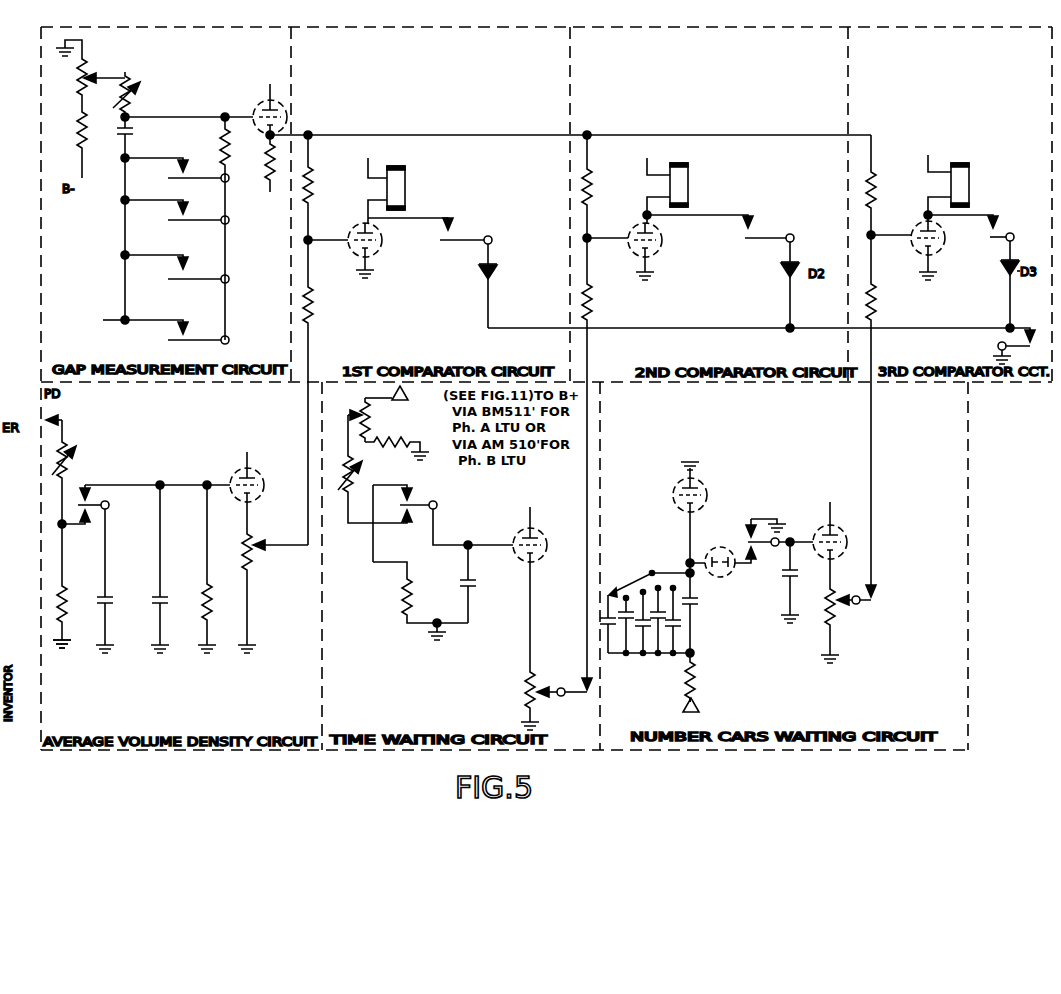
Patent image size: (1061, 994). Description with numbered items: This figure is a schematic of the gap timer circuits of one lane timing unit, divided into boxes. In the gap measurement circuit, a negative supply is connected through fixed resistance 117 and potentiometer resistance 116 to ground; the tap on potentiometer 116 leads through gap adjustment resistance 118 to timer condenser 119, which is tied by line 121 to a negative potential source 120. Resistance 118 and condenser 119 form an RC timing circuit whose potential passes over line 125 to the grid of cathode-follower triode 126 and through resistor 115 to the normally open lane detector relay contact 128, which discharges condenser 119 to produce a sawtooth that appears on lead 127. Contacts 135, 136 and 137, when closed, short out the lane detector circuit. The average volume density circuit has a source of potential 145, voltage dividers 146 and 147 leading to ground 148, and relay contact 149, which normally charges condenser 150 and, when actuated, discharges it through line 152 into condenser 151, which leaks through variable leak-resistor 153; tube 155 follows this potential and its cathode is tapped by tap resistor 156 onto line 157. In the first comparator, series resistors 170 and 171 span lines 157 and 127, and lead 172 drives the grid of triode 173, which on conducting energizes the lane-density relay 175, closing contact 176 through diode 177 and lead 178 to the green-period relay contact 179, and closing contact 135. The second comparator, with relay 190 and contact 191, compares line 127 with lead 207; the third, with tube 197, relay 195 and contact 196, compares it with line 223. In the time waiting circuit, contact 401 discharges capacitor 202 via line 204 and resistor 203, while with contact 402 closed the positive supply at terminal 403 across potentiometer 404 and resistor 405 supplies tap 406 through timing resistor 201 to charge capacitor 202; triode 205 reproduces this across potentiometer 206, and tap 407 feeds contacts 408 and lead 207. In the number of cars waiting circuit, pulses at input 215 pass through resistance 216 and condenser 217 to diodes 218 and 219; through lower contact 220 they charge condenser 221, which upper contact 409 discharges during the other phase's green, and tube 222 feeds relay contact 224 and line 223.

The resistor 115 is at (240, 228).
The potentiometer resistance 116 is at (92, 62).
The fixed resistance 117 is at (91, 130).
The gap adjustment resistance 118 is at (140, 92).
The timer condenser 119 is at (136, 135).
The source of negative potential 120 is at (107, 318).
The line 121 is at (121, 232).
The line 125 is at (175, 112).
The triode 126 is at (257, 101).
The lead 127 is at (470, 133).
The lane detector relay contact 128 is at (188, 158).
The relay LDS contact 135 is at (188, 200).
The relay contact 136 is at (177, 262).
The relay contact 137 is at (177, 324).
The source of potential 145 is at (64, 418).
The voltage divider 146 is at (76, 460).
The voltage divider 147 is at (70, 594).
The ground 148 is at (72, 645).
The relay contact 149 is at (112, 505).
The condenser 150 is at (113, 597).
The condenser 151 is at (168, 597).
The line 152 is at (143, 481).
The variable leak-resistor 153 is at (214, 596).
The tube 155 is at (258, 476).
The tap resistor 156 is at (255, 558).
The line 157 is at (296, 536).
The voltage dividing resistor 170 is at (316, 306).
The voltage dividing resistor 171 is at (316, 192).
The lead 172 is at (315, 238).
The triode 173 is at (380, 250).
The LDS relay 175 is at (408, 180).
The contact 176 is at (458, 219).
The diode 177 is at (495, 268).
The lead 178 is at (505, 325).
The LV relay contact 179 is at (1032, 317).
The relay LST 190 is at (691, 177).
The relay contact 191 is at (760, 217).
The relay LNS 195 is at (973, 175).
The relay contact 196 is at (994, 219).
The tube 197 is at (922, 223).
The timing resistor 201 is at (355, 476).
The capacitor 202 is at (462, 583).
The resistor 203 is at (403, 583).
The line 204 is at (477, 541).
The triode 205 is at (521, 525).
The potentiometer 206 is at (524, 684).
The lead 207 is at (586, 528).
The input 215 is at (685, 708).
The resistance 216 is at (698, 665).
The condenser 217 is at (697, 606).
The diode 218 is at (700, 481).
The diode 219 is at (715, 554).
The NR relay lower contact 220 is at (746, 533).
The condenser 221 is at (784, 578).
The tube 222 is at (840, 525).
The line 223 is at (876, 587).
The LV relay contact 224 is at (886, 598).
The moving contact 401 is at (400, 499).
The contact 402 is at (402, 510).
The terminal 403 is at (409, 397).
The potentiometer 404 is at (371, 418).
The resistor 405 is at (404, 438).
The tap 406 is at (344, 411).
The tap 407 is at (544, 687).
The LV contacts 408 is at (580, 685).
The upper contact 409 is at (765, 517).